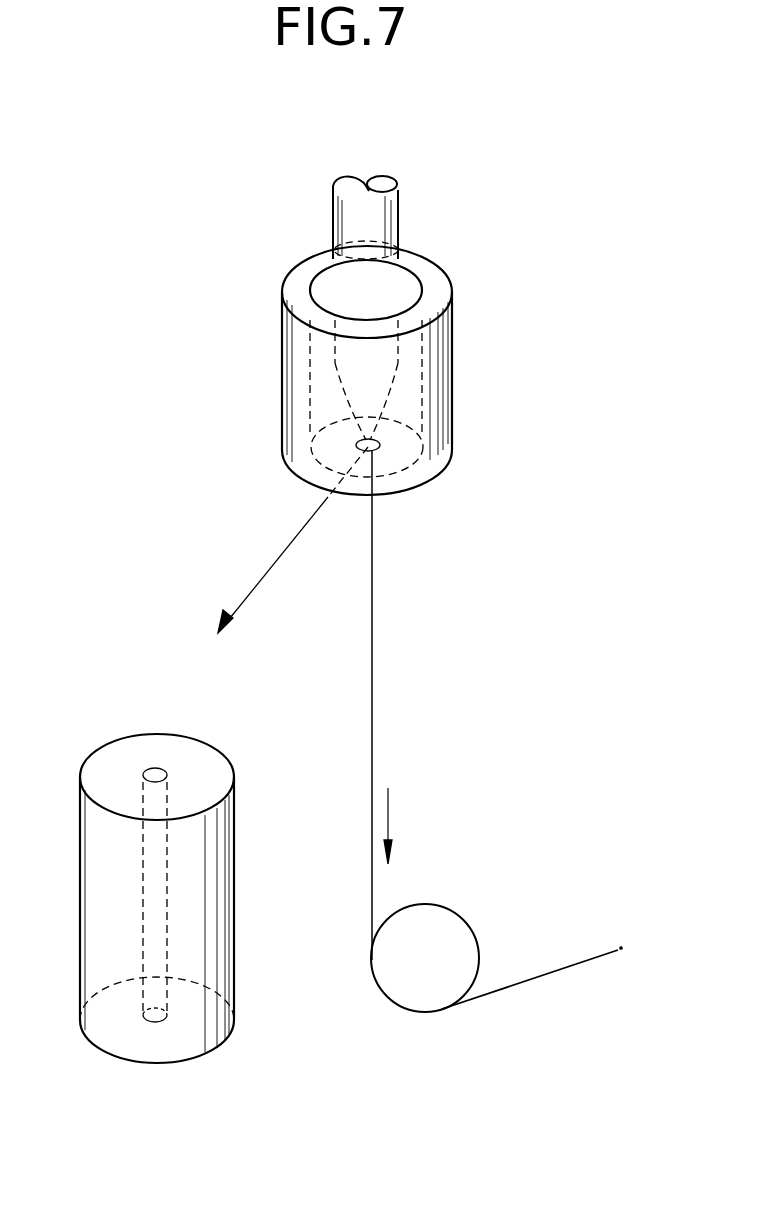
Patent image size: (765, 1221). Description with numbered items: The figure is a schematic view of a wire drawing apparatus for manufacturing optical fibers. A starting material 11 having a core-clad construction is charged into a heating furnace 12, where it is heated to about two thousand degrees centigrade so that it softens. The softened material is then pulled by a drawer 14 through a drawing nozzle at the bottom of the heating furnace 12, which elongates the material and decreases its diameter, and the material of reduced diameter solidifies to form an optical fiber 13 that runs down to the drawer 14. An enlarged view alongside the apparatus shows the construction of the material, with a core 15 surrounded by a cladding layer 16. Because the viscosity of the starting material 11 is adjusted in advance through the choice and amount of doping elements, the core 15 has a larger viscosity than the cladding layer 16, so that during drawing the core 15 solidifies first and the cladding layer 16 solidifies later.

The starting material 11 is at (390, 218).
The heating furnace 12 is at (443, 353).
The optical fiber 13 is at (373, 659).
The drawer 14 is at (443, 917).
The core 15 is at (156, 772).
The cladding layer 16 is at (207, 760).